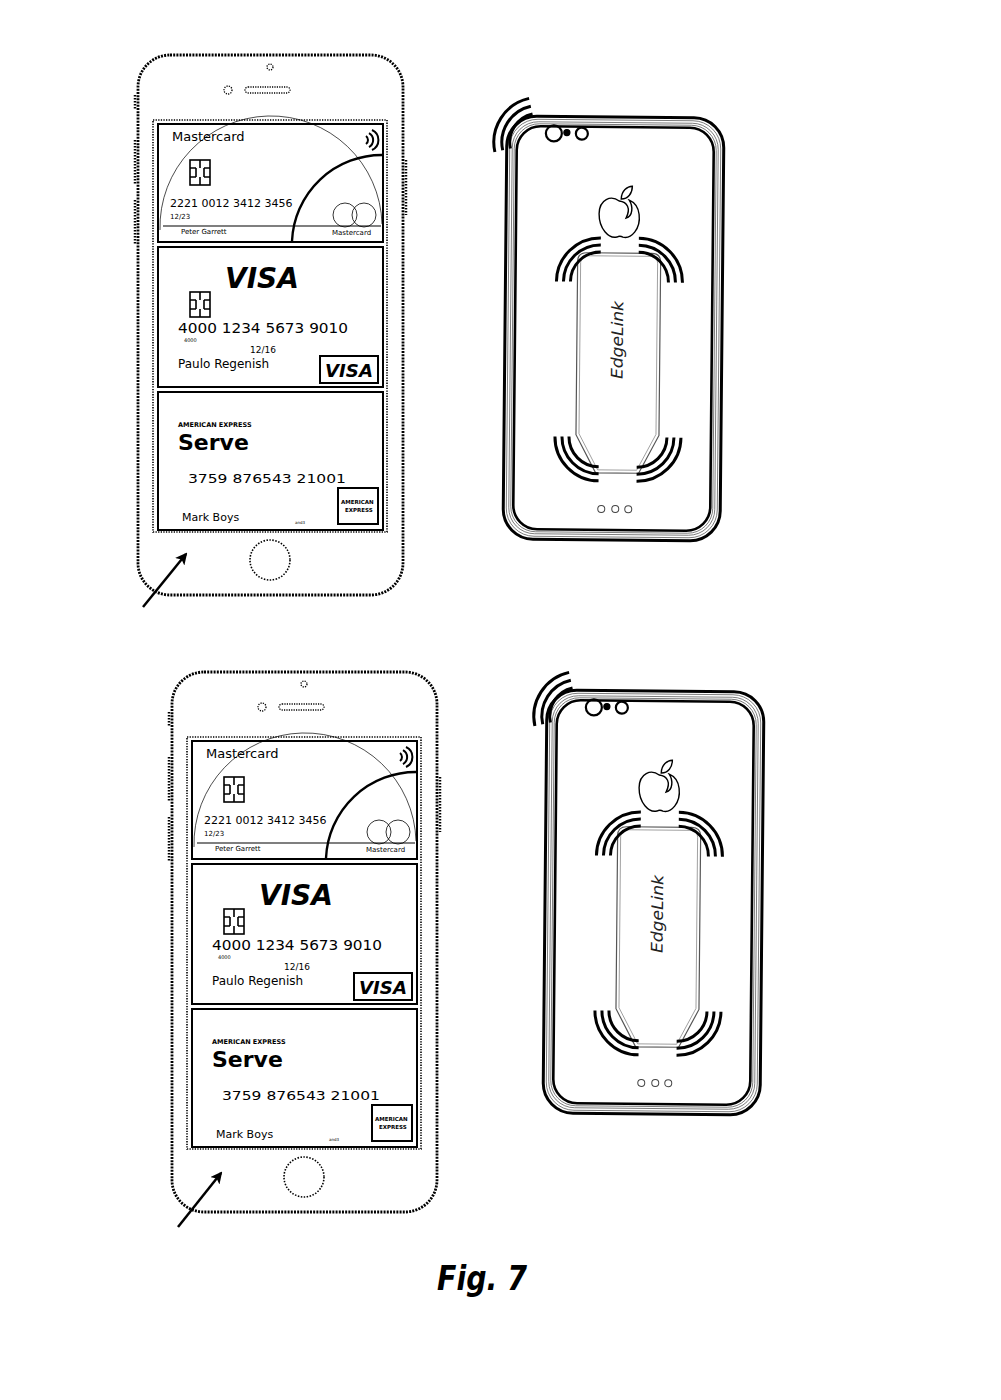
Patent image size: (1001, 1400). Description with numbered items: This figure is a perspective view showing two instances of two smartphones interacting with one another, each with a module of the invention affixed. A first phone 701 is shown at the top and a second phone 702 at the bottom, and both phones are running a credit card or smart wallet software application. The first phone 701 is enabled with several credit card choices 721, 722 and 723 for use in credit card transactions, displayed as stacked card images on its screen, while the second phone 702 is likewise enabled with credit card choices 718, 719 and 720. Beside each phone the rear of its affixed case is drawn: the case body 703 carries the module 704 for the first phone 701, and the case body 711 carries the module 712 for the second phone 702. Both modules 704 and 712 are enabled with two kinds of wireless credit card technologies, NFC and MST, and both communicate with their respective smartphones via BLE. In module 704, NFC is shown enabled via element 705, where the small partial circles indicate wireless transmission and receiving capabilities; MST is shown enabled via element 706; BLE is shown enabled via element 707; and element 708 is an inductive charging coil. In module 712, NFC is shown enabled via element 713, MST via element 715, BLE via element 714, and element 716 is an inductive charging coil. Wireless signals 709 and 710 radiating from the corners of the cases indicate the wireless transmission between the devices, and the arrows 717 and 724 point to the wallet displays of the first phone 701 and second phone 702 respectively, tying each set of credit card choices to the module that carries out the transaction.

The first smartphone 701 is at (140, 95).
The second smartphone 702 is at (350, 672).
The first mobile device case 703 is at (712, 280).
The module 704 is at (647, 407).
The NFC element 705 is at (566, 248).
The MST element 706 is at (562, 463).
The BLE element 707 is at (664, 245).
The inductive charging coil 708 is at (674, 472).
The wireless signal from first case 709 is at (498, 106).
The wireless signal from second case 710 is at (538, 696).
The second mobile device case 711 is at (738, 775).
The module 712 is at (693, 930).
The NFC element 713 is at (606, 820).
The BLE element 714 is at (703, 822).
The MST element 715 is at (601, 1045).
The inductive charging coil 716 is at (713, 1045).
The wallet display of first mobile device 717 is at (141, 595).
The credit card choice 718 is at (220, 1080).
The credit card choice 719 is at (202, 965).
The credit card choice 720 is at (200, 770).
The credit card choice 721 is at (170, 518).
The credit card choice 722 is at (175, 368).
The credit card choice 723 is at (160, 228).
The wallet display of second mobile device 724 is at (177, 1215).